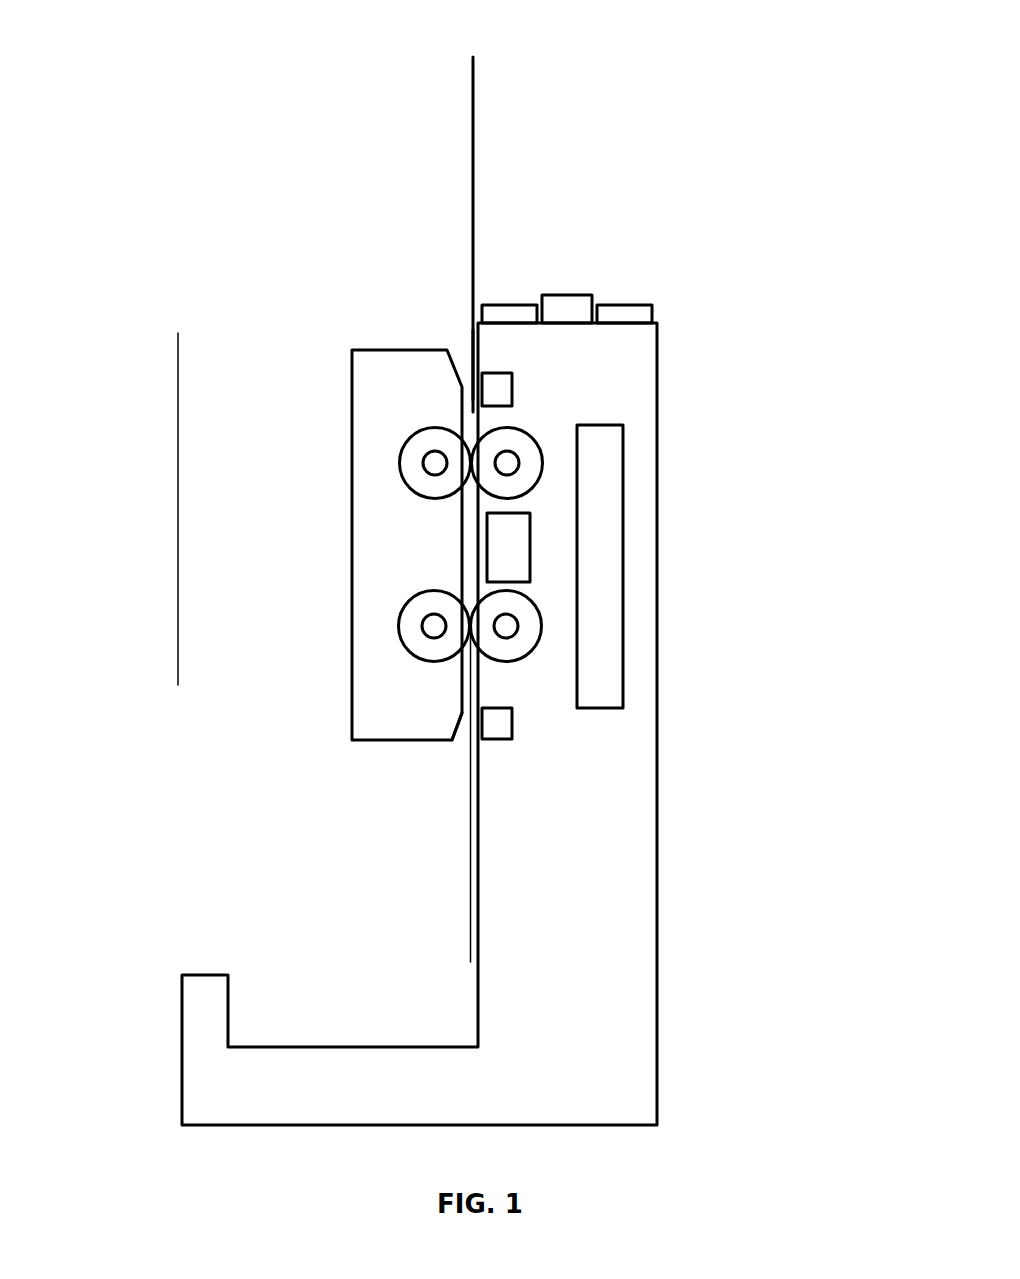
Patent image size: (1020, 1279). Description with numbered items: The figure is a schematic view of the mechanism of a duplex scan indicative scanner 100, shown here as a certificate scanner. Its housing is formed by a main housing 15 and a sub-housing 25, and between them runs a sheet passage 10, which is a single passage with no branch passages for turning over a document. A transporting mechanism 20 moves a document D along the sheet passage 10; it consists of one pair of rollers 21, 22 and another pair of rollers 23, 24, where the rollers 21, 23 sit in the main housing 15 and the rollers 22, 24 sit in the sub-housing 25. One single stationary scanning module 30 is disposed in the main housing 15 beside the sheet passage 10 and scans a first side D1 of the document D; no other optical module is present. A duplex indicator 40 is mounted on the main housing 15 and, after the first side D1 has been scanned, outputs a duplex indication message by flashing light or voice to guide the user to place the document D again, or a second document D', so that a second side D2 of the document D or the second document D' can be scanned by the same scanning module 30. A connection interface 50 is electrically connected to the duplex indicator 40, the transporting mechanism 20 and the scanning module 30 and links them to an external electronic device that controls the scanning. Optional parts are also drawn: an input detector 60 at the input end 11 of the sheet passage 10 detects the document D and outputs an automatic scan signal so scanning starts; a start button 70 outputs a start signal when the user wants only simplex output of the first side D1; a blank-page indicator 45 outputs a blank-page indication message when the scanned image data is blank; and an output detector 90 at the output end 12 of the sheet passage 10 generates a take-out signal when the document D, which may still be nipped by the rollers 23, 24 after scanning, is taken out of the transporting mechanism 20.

The duplex scan indicative scanner 100 is at (478, 586).
The sheet passage 10 is at (432, 484).
The input end 11 is at (465, 358).
The output end 12 is at (460, 743).
The main housing 15 is at (657, 350).
The transporting mechanism 20 is at (442, 412).
The roller 21 is at (535, 467).
The roller 22 is at (410, 463).
The roller 23 is at (540, 627).
The roller 24 is at (405, 626).
The sub-housing 25 is at (352, 385).
The scanning module 30 is at (520, 537).
The duplex indicator 40 is at (630, 317).
The blank-page indicator 45 is at (505, 313).
The connection interface 50 is at (615, 563).
The input detector 60 is at (506, 395).
The start button 70 is at (582, 312).
The output detector 90 is at (513, 728).
The document D is at (435, 484).
The first side D1 is at (475, 170).
The second side D2 is at (473, 115).
The second document D' is at (137, 509).